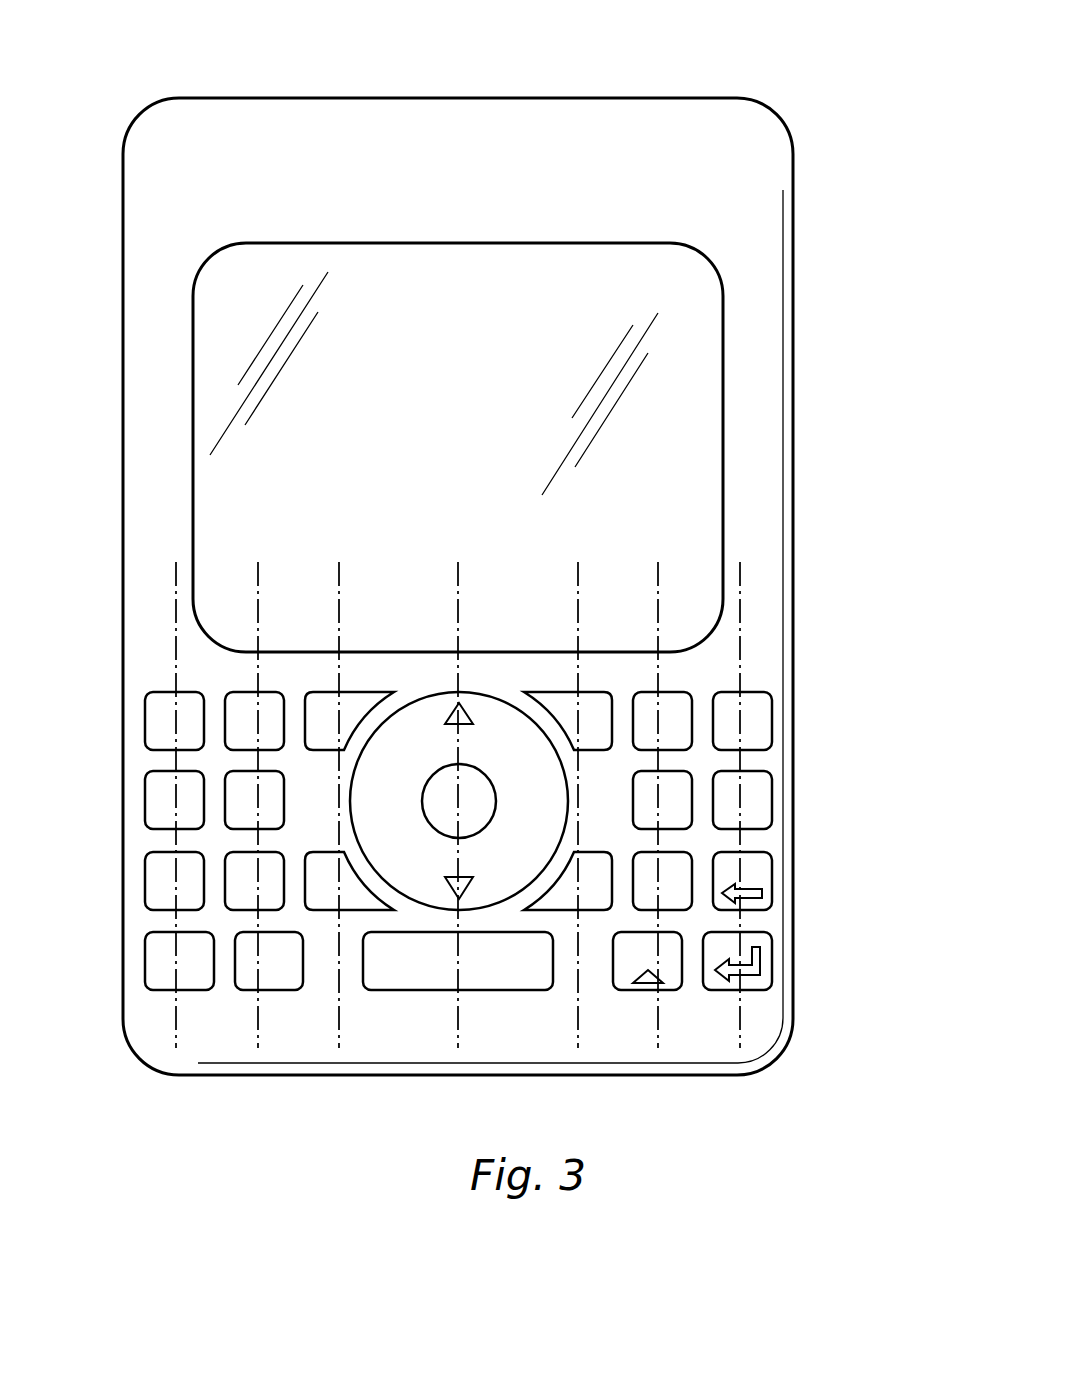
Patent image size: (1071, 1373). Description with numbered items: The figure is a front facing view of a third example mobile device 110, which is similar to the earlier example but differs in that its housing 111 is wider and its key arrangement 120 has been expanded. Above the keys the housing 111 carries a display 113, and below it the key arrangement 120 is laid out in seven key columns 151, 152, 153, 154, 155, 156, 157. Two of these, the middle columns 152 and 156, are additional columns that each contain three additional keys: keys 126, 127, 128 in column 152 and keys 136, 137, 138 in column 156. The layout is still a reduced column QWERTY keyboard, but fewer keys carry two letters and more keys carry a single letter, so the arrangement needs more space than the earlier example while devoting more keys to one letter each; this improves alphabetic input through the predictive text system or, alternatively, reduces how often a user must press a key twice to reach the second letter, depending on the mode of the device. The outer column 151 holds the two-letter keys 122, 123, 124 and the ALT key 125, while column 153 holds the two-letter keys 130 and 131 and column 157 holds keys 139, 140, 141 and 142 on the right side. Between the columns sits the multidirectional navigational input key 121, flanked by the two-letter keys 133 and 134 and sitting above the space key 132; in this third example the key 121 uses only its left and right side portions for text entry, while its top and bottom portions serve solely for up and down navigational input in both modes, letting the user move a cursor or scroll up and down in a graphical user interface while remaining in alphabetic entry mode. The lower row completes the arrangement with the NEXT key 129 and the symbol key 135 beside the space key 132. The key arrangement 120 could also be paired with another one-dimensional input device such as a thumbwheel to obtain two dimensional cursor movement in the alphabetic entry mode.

The mobile device 110 is at (606, 96).
The housing 111 is at (708, 177).
The display screen 113 is at (555, 418).
The key arrangement 120 is at (210, 1012).
The multidirectional navigational input key 121 is at (478, 692).
The QW key 122 is at (145, 722).
The AS key 123 is at (145, 800).
The ZX key 124 is at (145, 885).
The ALT key 125 is at (145, 960).
The additional key 126 is at (233, 692).
The additional key 127 is at (225, 830).
The additional key 128 is at (225, 910).
The NEXT key 129 is at (282, 990).
The RT key 130 is at (350, 692).
The VB key 131 is at (318, 910).
The SPACE key 132 is at (495, 990).
The YU key 133 is at (560, 692).
The N key 134 is at (590, 910).
The symbol key 135 is at (672, 990).
The additional key 136 is at (683, 692).
The additional key 137 is at (692, 830).
The additional key 138 is at (692, 910).
The OP key 139 is at (772, 730).
The L key 140 is at (772, 800).
The DEL key 141 is at (772, 895).
The enter key 142 is at (772, 960).
The first key column 151 is at (176, 593).
The additional middle column 152 is at (258, 582).
The third key column 153 is at (339, 580).
The fourth key column 154 is at (458, 570).
The fifth key column 155 is at (578, 580).
The additional middle column 156 is at (658, 580).
The seventh key column 157 is at (740, 612).